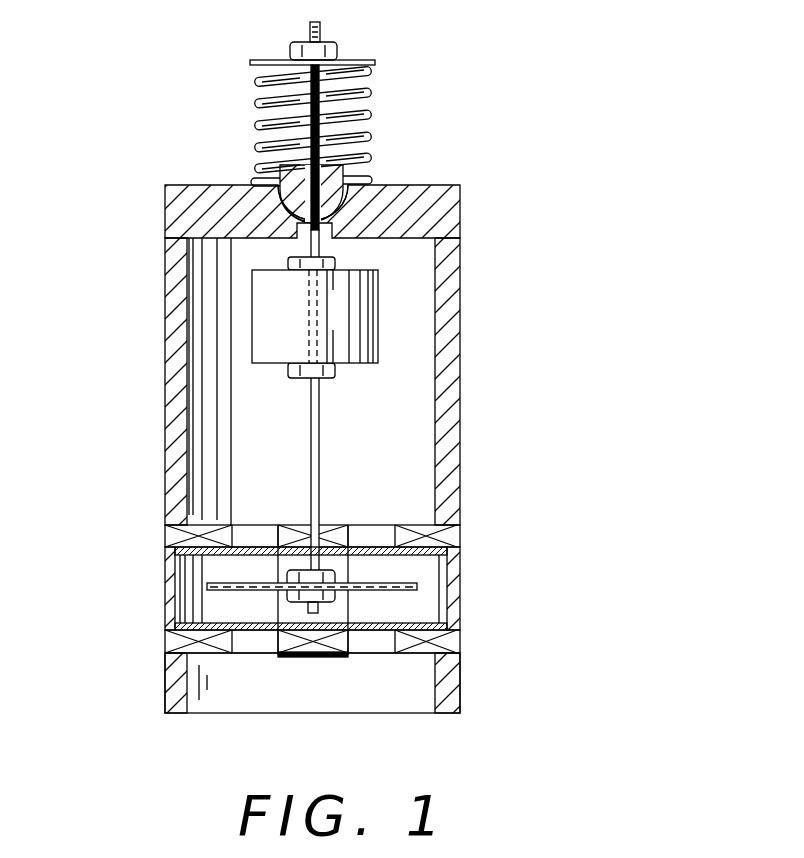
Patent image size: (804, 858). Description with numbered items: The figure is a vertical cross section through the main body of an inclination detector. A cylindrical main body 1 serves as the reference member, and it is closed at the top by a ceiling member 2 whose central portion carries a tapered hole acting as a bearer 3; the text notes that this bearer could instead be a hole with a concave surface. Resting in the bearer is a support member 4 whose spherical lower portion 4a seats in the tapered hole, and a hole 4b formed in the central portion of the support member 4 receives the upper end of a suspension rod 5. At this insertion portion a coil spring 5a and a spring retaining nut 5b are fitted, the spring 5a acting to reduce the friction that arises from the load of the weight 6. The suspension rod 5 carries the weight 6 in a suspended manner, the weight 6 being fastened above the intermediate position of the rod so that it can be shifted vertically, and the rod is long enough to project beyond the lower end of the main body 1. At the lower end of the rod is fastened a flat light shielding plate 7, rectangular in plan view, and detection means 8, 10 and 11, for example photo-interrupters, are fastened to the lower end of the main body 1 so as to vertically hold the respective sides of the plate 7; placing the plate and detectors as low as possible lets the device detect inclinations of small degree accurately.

The cylindrical main body 1 is at (455, 338).
The ceiling member 2 is at (395, 218).
The bearer 3 is at (283, 228).
The support member 4 is at (377, 188).
The spherical lower portion 4a is at (283, 217).
The hole 4b is at (337, 167).
The suspension rod 5 is at (313, 447).
The coil spring 5a is at (367, 92).
The spring retaining nut 5b is at (337, 50).
The weight 6 is at (262, 332).
The light shielding plate 7 is at (257, 590).
The detection means 8 is at (160, 582).
The detection means 10 is at (464, 597).
The detection means 11 is at (333, 660).